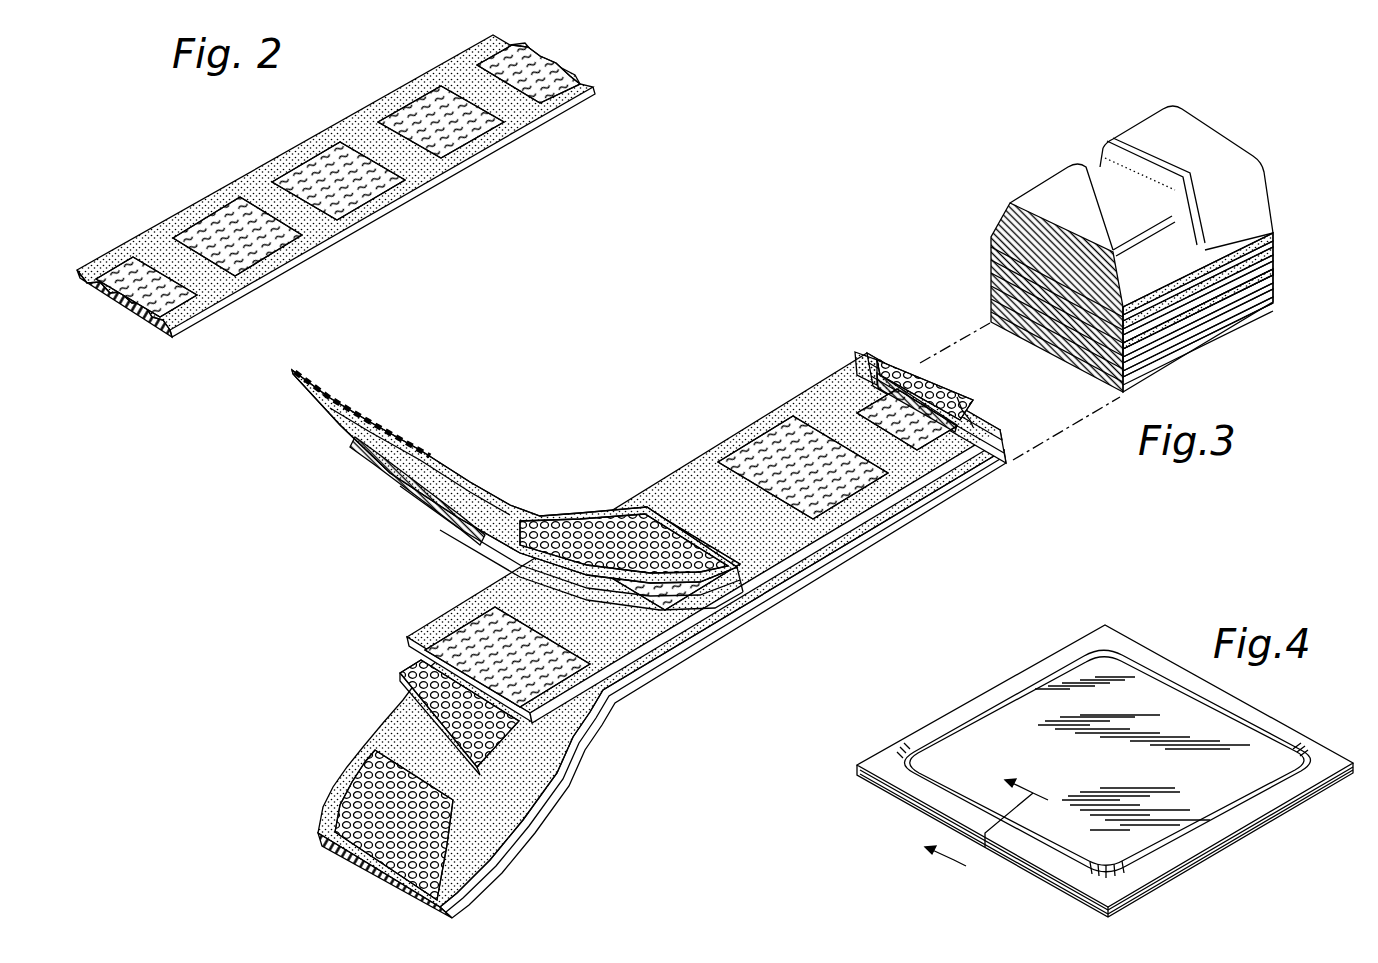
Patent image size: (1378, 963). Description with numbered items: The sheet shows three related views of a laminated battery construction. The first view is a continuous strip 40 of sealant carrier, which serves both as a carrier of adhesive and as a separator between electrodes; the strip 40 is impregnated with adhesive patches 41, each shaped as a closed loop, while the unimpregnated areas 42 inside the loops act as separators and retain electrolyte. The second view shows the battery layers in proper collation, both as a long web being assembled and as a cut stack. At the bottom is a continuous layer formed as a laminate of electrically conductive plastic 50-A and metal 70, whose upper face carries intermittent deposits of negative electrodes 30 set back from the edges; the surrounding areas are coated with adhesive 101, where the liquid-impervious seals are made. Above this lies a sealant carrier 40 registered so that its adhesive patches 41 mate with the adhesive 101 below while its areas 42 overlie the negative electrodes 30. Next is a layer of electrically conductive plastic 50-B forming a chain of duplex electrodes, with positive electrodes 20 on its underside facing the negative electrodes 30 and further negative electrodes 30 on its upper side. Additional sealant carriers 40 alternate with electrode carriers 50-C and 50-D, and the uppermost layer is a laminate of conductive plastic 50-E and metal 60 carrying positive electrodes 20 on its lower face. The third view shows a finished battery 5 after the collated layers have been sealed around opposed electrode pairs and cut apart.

In FIG. 4, the battery 5 is at (1204, 857).
In FIG. 3, the positive electrodes 20 is at (385, 468).
In FIG. 3, the negative electrodes 30 is at (583, 537).
In FIG. 2, the continuous strip of sealant carrier 40 is at (377, 211).
In FIG. 3, the continuous strip of sealant carrier 40 is at (440, 623).
In FIG. 2, the adhesive patches 41 is at (250, 180).
In FIG. 3, the adhesive patches 41 is at (903, 480).
In FIG. 2, the areas for electrolyte 42 is at (462, 130).
In FIG. 3, the areas for electrolyte 42 is at (457, 650).
In FIG. 3, the electrically conductive plastic layer 50-A is at (317, 833).
In FIG. 3, the electrically conductive plastic layer 50-B is at (347, 398).
In FIG. 3, the electrode carrier 50-C is at (860, 373).
In FIG. 3, the electrode carrier 50-D is at (1273, 243).
In FIG. 3, the electrically conductive plastic layer 50-E is at (1274, 230).
In FIG. 3, the metal 60 is at (1120, 93).
In FIG. 3, the metal 70 is at (357, 857).
In FIG. 3, the adhesive 101 is at (453, 847).